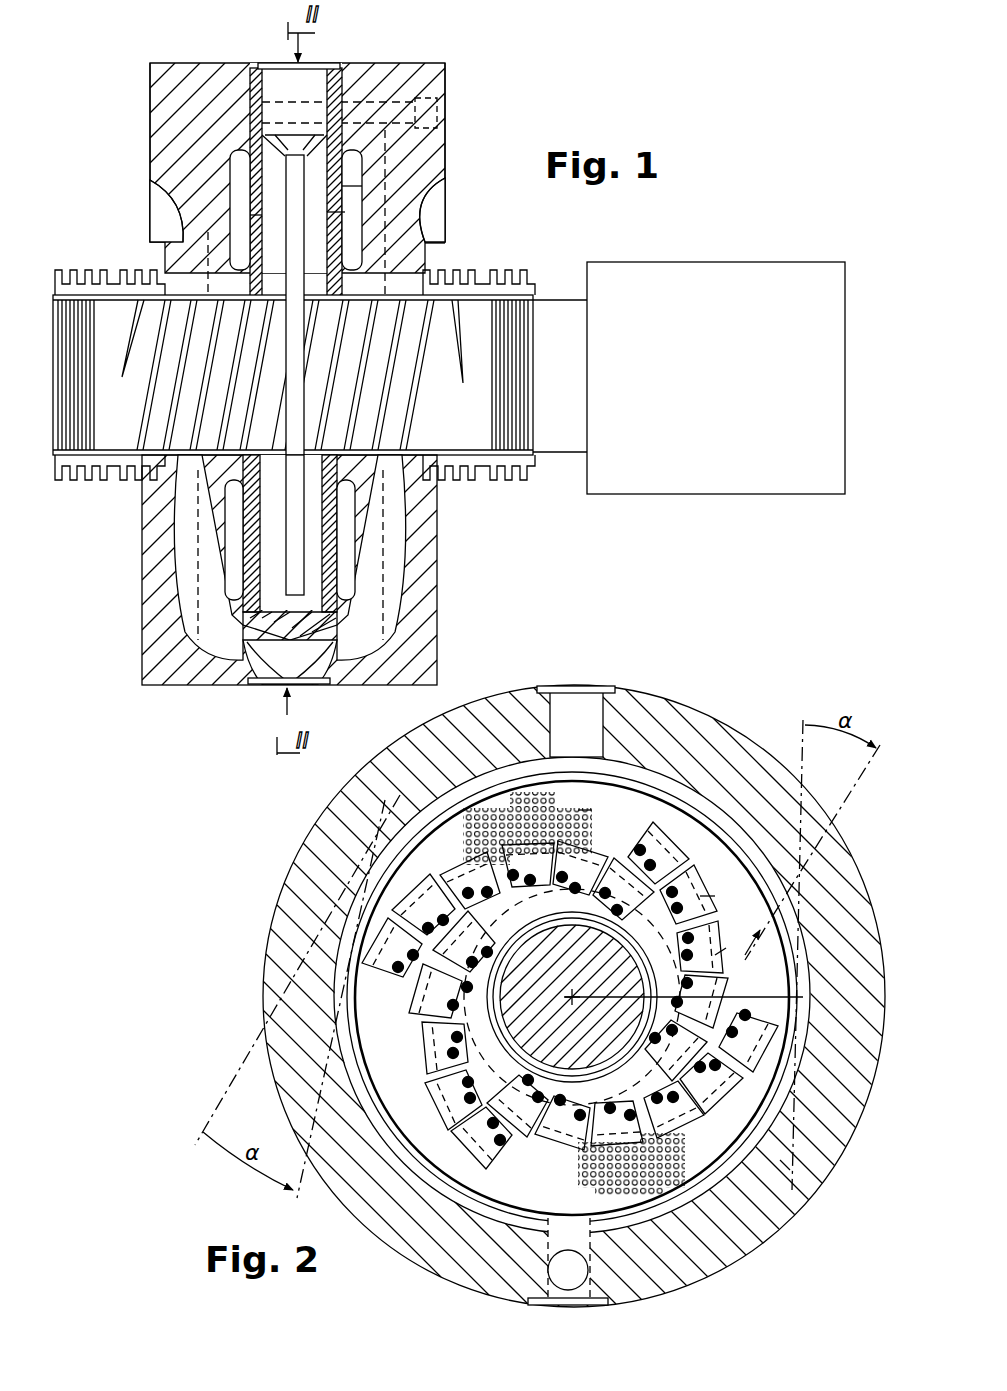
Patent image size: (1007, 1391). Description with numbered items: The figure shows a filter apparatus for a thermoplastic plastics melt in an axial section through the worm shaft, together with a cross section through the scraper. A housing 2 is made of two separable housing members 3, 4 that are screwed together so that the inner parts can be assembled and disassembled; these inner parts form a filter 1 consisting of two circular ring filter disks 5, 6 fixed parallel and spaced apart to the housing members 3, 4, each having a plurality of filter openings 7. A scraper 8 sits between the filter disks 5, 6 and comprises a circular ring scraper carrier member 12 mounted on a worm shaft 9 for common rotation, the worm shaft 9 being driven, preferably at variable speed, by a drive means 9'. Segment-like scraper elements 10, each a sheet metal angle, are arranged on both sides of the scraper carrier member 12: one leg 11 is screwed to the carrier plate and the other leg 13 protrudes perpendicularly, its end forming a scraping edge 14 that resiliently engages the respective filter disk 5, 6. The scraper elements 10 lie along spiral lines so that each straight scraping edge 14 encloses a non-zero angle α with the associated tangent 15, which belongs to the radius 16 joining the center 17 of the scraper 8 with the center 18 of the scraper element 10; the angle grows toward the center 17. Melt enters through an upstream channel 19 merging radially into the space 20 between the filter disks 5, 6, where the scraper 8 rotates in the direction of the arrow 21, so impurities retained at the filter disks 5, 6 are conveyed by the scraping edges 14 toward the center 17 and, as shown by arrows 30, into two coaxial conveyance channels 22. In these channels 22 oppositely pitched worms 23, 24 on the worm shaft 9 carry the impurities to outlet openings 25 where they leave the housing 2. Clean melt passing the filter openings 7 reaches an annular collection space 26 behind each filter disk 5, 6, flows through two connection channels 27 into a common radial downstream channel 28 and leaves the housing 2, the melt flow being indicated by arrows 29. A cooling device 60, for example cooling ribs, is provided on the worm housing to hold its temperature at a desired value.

In FIG. 1, the filter 1 is at (428, 244).
In FIG. 2, the filter 1 is at (548, 782).
In FIG. 1, the housing 2 is at (147, 52).
In FIG. 2, the housing 2 is at (260, 1000).
In FIG. 1, the housing member 3 is at (190, 72).
In FIG. 1, the housing member 4 is at (430, 78).
In FIG. 1, the filter disk 5 is at (246, 216).
In FIG. 2, the filter disk 5 is at (582, 798).
In FIG. 1, the filter disk 6 is at (348, 187).
In FIG. 2, the filter openings 7 is at (478, 830).
In FIG. 1, the scraper 8 is at (346, 72).
In FIG. 1, the worm shaft 9 is at (320, 411).
In FIG. 2, the worm shaft 9 is at (525, 1006).
In FIG. 1, the drive means 9' is at (716, 351).
In FIG. 1, the scraper elements 10 is at (238, 181).
In FIG. 2, the scraper elements 10 is at (656, 846).
In FIG. 2, the leg 11 is at (678, 858).
In FIG. 1, the scraper carrier member 12 is at (432, 103).
In FIG. 2, the scraper carrier member 12 is at (690, 826).
In FIG. 1, the leg 13 is at (350, 212).
In FIG. 2, the leg 13 is at (735, 944).
In FIG. 2, the scraping edge 14 is at (250, 872).
In FIG. 2, the tangent 15 is at (800, 1166).
In FIG. 2, the radius 16 is at (758, 1012).
In FIG. 2, the center 17 is at (572, 997).
In FIG. 2, the center 18 is at (703, 1000).
In FIG. 1, the upstream channel 19 is at (285, 80).
In FIG. 2, the upstream channel 19 is at (580, 712).
In FIG. 1, the space 20 is at (312, 549).
In FIG. 2, the arrow 21 is at (810, 880).
In FIG. 1, the conveyance channels 22 is at (125, 276).
In FIG. 1, the worm 23 is at (132, 470).
In FIG. 1, the worm 24 is at (432, 452).
In FIG. 1, the outlet opening 25 is at (68, 470).
In FIG. 1, the collection space 26 is at (240, 160).
In FIG. 1, the connection channels 27 is at (196, 612).
In FIG. 2, the connection channels 27 is at (565, 1271).
In FIG. 1, the downstream channel 28 is at (276, 682).
In FIG. 2, the downstream channel 28 is at (578, 1294).
In FIG. 1, the arrows 29 is at (312, 66).
In FIG. 1, the arrows 30 is at (290, 300).
In FIG. 1, the cooling device 60 is at (534, 286).